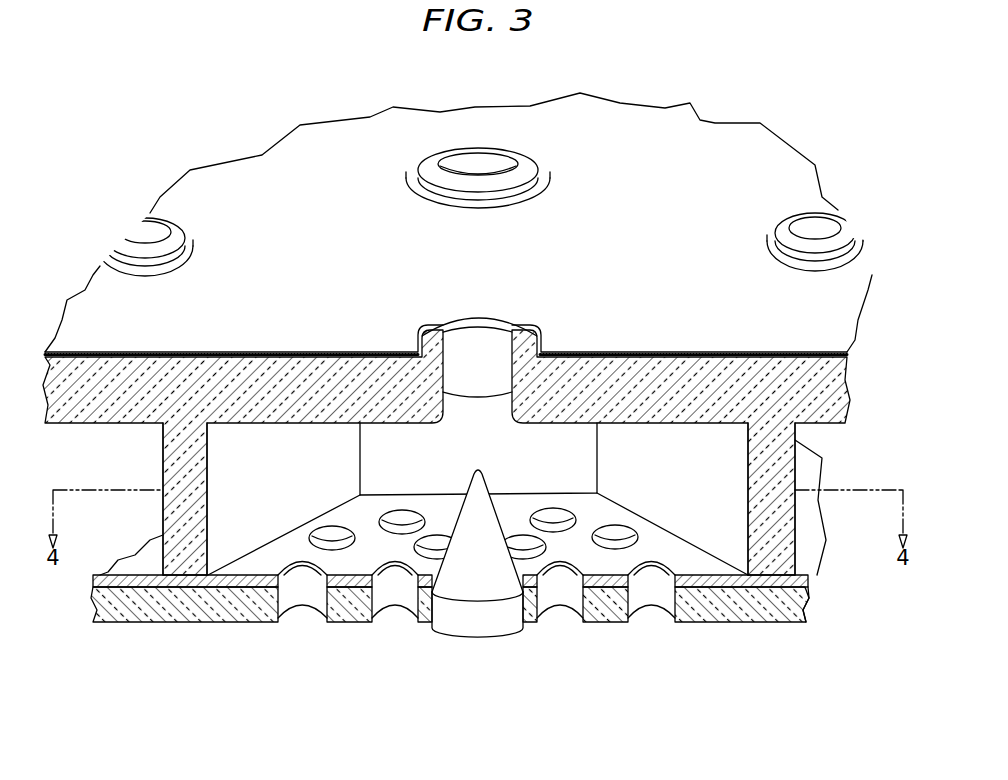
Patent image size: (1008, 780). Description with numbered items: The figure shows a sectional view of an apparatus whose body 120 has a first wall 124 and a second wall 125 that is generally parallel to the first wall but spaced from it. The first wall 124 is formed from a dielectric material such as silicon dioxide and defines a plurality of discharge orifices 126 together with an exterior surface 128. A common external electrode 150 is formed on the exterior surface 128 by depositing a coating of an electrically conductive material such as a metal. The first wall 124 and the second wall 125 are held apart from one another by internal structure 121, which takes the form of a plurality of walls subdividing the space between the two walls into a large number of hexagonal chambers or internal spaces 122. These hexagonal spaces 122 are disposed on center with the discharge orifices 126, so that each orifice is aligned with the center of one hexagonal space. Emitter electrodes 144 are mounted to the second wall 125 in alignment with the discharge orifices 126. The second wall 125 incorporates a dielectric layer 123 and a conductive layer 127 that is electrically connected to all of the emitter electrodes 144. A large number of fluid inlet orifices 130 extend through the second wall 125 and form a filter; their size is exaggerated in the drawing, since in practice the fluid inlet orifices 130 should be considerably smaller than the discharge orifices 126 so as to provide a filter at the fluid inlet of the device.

The body 120 is at (884, 386).
The internal structure 121 is at (210, 472).
The hexagonal chambers 122 is at (238, 542).
The dielectric layer 123 is at (699, 598).
The first wall 124 is at (590, 362).
The second wall 125 is at (756, 636).
The discharge orifices 126 is at (480, 162).
The conductive layer 127 is at (798, 610).
The exterior surface 128 is at (724, 360).
The fluid inlet orifices 130 is at (393, 598).
The emitter electrodes 144 is at (482, 471).
The common external electrode 150 is at (683, 118).